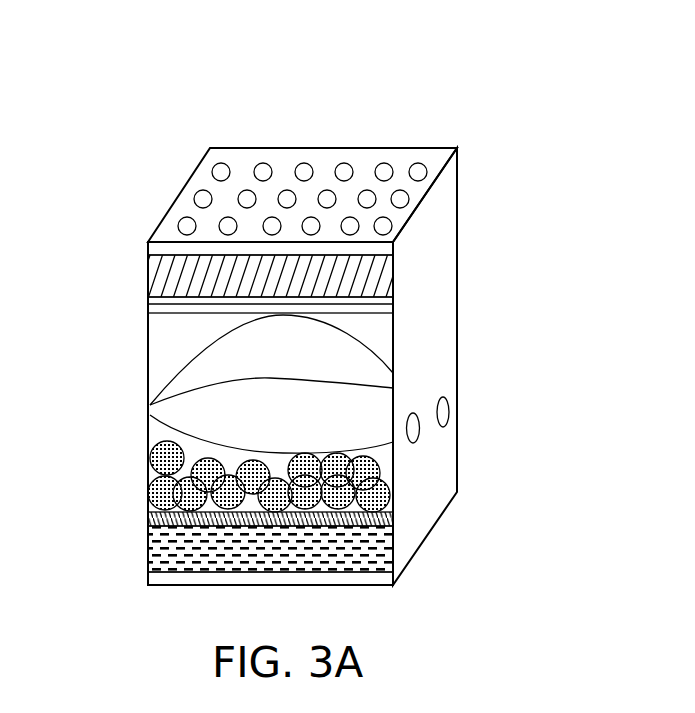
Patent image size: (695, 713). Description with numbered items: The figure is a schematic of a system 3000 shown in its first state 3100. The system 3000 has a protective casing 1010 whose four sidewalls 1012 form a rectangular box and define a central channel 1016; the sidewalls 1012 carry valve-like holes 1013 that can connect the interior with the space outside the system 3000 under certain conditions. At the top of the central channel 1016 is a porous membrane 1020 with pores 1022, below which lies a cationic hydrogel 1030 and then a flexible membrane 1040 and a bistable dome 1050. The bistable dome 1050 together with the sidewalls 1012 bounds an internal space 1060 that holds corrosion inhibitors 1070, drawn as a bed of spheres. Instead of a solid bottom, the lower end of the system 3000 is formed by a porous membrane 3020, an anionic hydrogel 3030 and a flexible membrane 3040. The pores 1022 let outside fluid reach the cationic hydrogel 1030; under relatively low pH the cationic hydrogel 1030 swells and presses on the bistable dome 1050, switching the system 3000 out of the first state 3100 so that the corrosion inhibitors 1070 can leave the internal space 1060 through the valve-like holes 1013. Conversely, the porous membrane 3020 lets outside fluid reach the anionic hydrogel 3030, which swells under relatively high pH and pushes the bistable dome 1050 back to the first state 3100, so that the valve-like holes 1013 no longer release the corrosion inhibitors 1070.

The system 3000 is at (330, 305).
The first state 3100 is at (243, 177).
The protective casing 1010 is at (293, 374).
The sidewalls 1012 is at (476, 366).
The valve-like holes 1013 is at (447, 410).
The central channel 1016 is at (383, 333).
The porous membrane 1020 is at (148, 248).
The pores 1022 is at (345, 162).
The cationic hydrogel 1030 is at (148, 279).
The flexible membrane 1040 is at (148, 306).
The bistable dome 1050 is at (180, 417).
The internal space 1060 is at (230, 460).
The corrosion inhibitors 1070 is at (148, 500).
The porous membrane 3020 is at (155, 577).
The anionic hydrogel 3030 is at (148, 550).
The flexible membrane 3040 is at (148, 522).